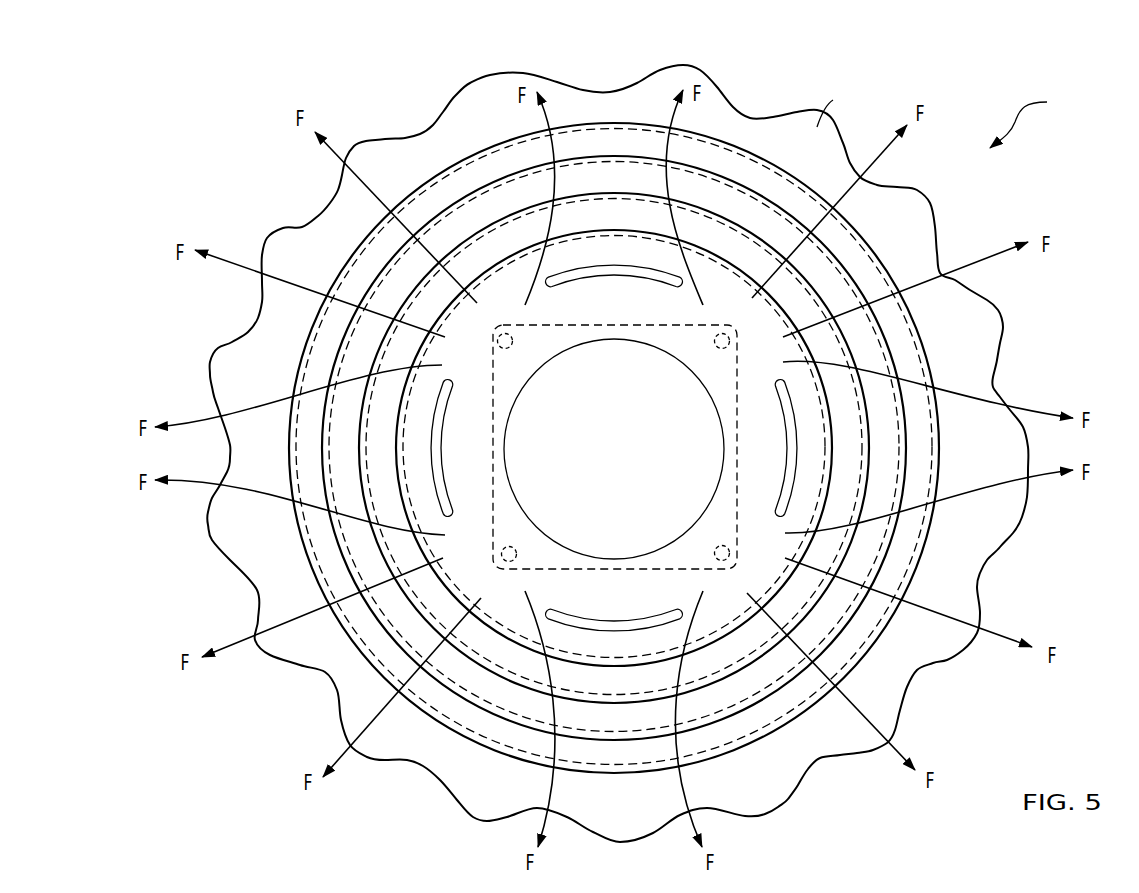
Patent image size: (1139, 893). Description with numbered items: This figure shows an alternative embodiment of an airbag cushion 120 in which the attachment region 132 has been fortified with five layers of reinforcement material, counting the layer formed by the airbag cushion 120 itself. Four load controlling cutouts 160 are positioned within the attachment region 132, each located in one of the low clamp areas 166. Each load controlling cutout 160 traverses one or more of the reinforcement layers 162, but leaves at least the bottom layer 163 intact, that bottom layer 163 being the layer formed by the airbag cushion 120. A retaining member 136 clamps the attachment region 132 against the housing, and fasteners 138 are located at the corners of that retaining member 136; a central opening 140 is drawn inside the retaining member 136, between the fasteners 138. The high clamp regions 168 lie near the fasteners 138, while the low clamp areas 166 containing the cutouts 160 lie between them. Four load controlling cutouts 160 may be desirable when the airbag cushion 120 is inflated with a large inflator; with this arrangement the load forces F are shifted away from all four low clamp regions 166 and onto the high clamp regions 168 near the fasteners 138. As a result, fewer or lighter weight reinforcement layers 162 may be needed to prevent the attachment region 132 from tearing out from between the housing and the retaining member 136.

The airbag cushion 120 is at (840, 106).
The attachment region 132 is at (1033, 120).
The retaining member 136 is at (510, 326).
The fasteners 138 is at (511, 347).
The central opening 140 is at (601, 456).
The load controlling cutouts 160 is at (613, 265).
The reinforcement layers 162 is at (822, 482).
The bottom layer 163 is at (988, 532).
The low clamp areas 166 is at (599, 309).
The high clamp regions 168 is at (464, 337).